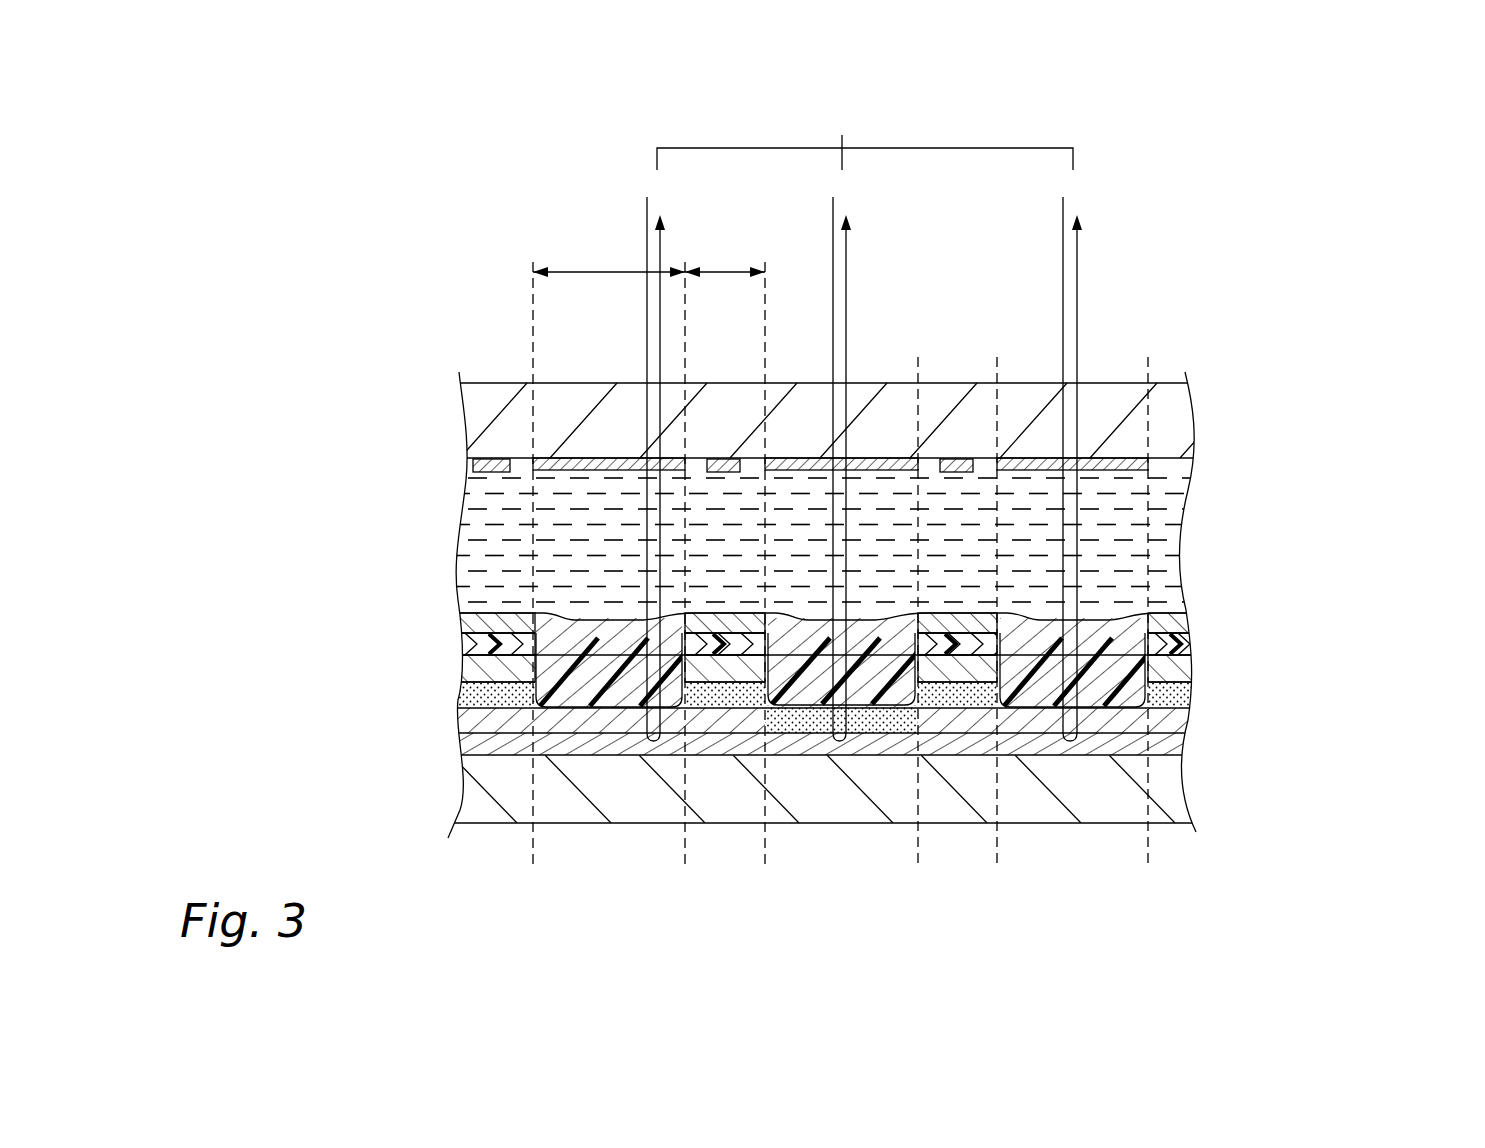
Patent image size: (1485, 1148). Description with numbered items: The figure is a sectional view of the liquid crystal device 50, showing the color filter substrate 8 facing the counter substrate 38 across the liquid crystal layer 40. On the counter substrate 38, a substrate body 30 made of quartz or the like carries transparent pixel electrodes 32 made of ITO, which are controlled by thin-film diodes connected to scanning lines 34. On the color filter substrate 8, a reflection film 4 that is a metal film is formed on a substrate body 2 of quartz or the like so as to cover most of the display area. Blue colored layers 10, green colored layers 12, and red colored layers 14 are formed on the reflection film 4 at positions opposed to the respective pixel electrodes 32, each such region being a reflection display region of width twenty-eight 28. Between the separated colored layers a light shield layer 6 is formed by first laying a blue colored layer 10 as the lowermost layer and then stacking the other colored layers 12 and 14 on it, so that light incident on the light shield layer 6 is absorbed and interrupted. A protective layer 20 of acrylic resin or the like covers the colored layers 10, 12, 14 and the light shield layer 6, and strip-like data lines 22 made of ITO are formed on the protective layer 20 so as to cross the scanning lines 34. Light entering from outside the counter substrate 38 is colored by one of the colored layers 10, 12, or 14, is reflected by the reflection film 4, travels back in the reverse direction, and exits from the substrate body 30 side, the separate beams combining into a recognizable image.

The substrate body 2 is at (1165, 795).
The reflection film 4 is at (1182, 750).
The light shield layer 6 is at (450, 653).
The color filter substrate 8 is at (340, 677).
The blue colored layer 10 is at (1190, 725).
The green colored layer 12 is at (1195, 697).
The red colored layer 14 is at (1188, 662).
The protective layer 20 is at (462, 638).
The data lines 22 is at (466, 625).
The pixel opening region 28 is at (609, 273).
The substrate body 30 is at (1175, 418).
The pixel electrodes 32 is at (1100, 462).
The scanning lines 34 is at (947, 460).
The counter substrate 38 is at (405, 421).
The filler resin layer 40 is at (1203, 470).
The liquid crystal device 50 is at (1335, 394).